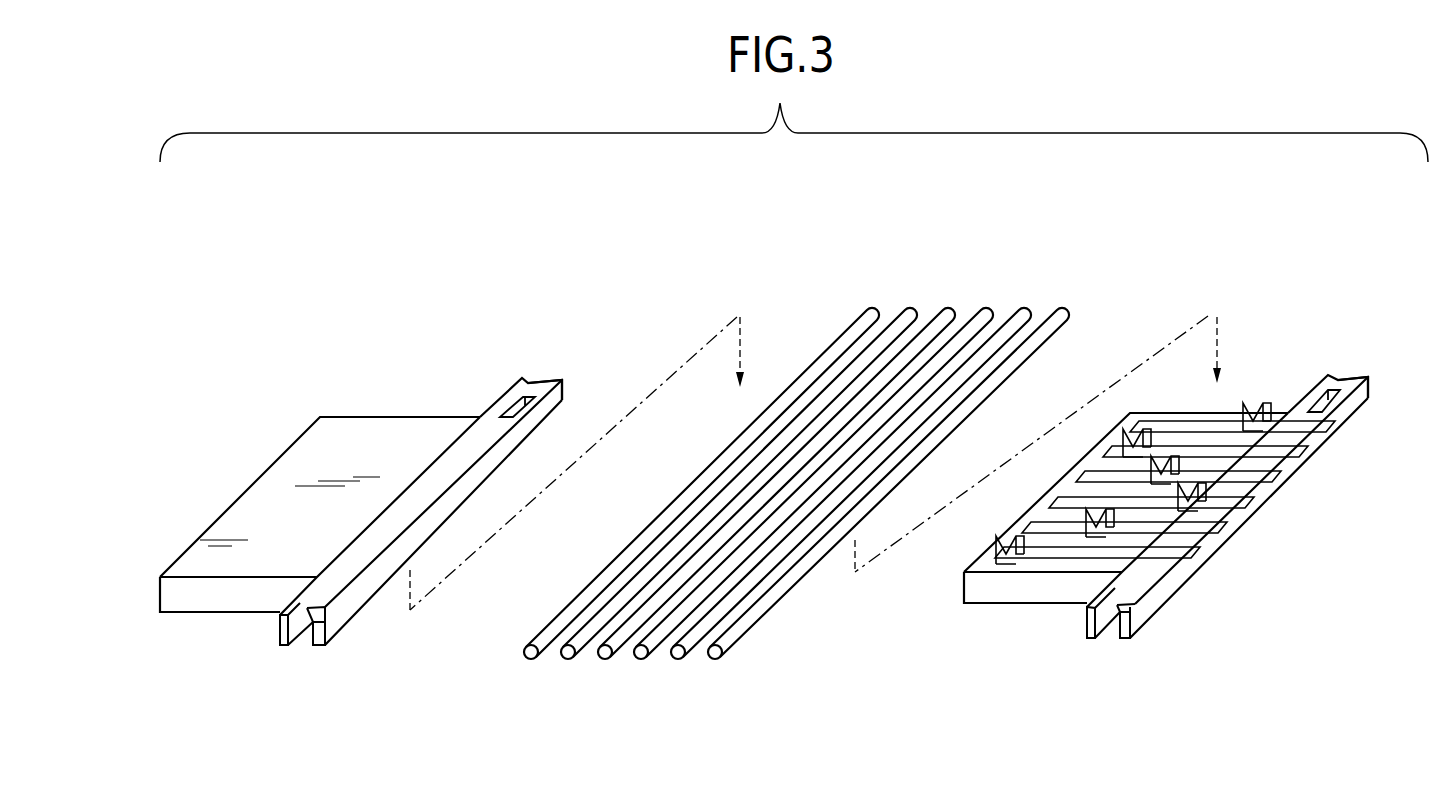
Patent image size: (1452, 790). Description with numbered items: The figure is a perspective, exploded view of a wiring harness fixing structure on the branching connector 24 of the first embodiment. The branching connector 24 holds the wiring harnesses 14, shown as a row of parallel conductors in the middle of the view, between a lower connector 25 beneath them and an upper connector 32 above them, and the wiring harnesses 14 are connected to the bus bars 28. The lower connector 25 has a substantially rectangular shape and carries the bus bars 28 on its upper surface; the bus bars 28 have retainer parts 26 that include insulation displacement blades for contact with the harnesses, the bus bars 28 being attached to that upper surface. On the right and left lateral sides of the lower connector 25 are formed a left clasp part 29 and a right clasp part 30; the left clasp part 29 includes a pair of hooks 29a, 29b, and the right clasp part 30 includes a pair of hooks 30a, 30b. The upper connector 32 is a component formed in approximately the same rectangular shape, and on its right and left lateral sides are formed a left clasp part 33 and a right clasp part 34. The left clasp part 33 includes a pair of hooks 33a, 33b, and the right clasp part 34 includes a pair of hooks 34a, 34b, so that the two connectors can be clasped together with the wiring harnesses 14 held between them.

The wiring harnesses 14 is at (946, 314).
The branching connector 24 is at (1095, 242).
The lower connector 25 is at (1039, 625).
The retainer parts 26 is at (1263, 405).
The bus bars 28 is at (1265, 542).
The left clasp part 29 is at (1160, 617).
The hook 29a is at (1084, 640).
The hook 29b is at (1120, 640).
The right clasp part 30 is at (1362, 400).
The hook 30a is at (1332, 375).
The hook 30b is at (1360, 377).
The upper connector 32 is at (220, 625).
The left clasp part 33 is at (345, 597).
The hook 33a is at (277, 634).
The hook 33b is at (313, 634).
The right clasp part 34 is at (487, 400).
The hook 34a is at (520, 386).
The hook 34b is at (542, 382).